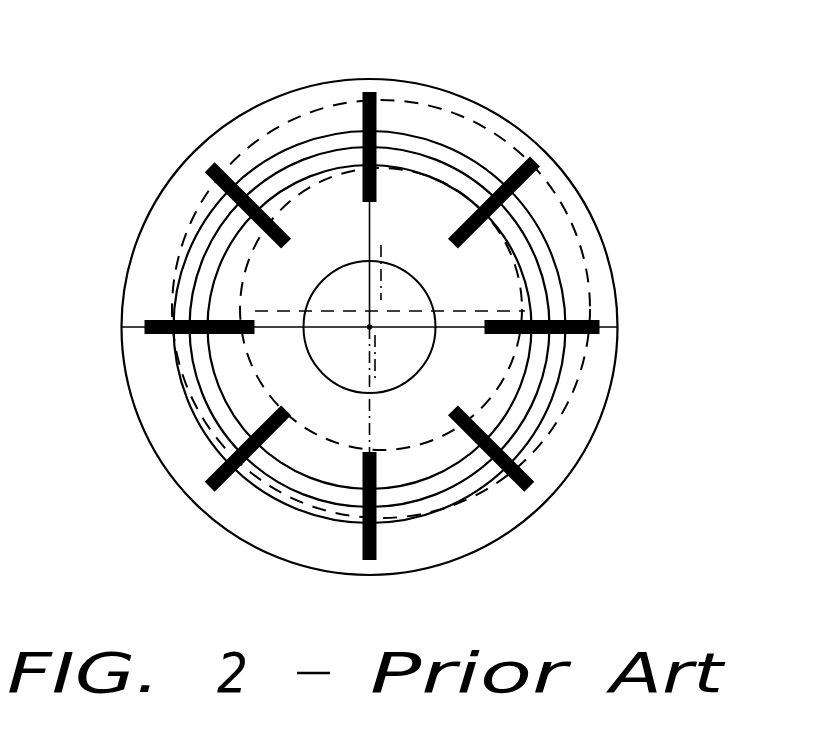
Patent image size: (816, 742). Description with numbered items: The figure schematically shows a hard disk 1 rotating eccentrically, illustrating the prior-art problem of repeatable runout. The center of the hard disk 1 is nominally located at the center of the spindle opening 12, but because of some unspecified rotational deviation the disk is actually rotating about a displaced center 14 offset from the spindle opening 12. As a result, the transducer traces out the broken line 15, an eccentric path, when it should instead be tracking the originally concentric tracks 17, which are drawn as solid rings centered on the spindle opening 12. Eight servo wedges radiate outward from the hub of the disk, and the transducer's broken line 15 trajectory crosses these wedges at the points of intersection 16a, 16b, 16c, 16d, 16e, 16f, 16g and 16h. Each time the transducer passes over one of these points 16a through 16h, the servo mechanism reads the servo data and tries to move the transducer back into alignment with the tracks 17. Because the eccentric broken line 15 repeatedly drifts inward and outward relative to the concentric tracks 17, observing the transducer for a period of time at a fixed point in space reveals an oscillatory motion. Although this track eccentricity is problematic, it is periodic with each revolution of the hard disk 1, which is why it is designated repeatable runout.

The hard disk 1 is at (598, 355).
The spindle opening 12 is at (374, 318).
The displaced center 14 is at (390, 305).
The broken line 15 is at (583, 258).
The point of intersection 16a is at (377, 95).
The point of intersection 16b is at (213, 175).
The point of intersection 16c is at (160, 320).
The point of intersection 16d is at (235, 477).
The point of intersection 16e is at (362, 527).
The point of intersection 16f is at (515, 480).
The point of intersection 16g is at (598, 320).
The point of intersection 16h is at (537, 163).
The concentric tracks 17 is at (530, 357).